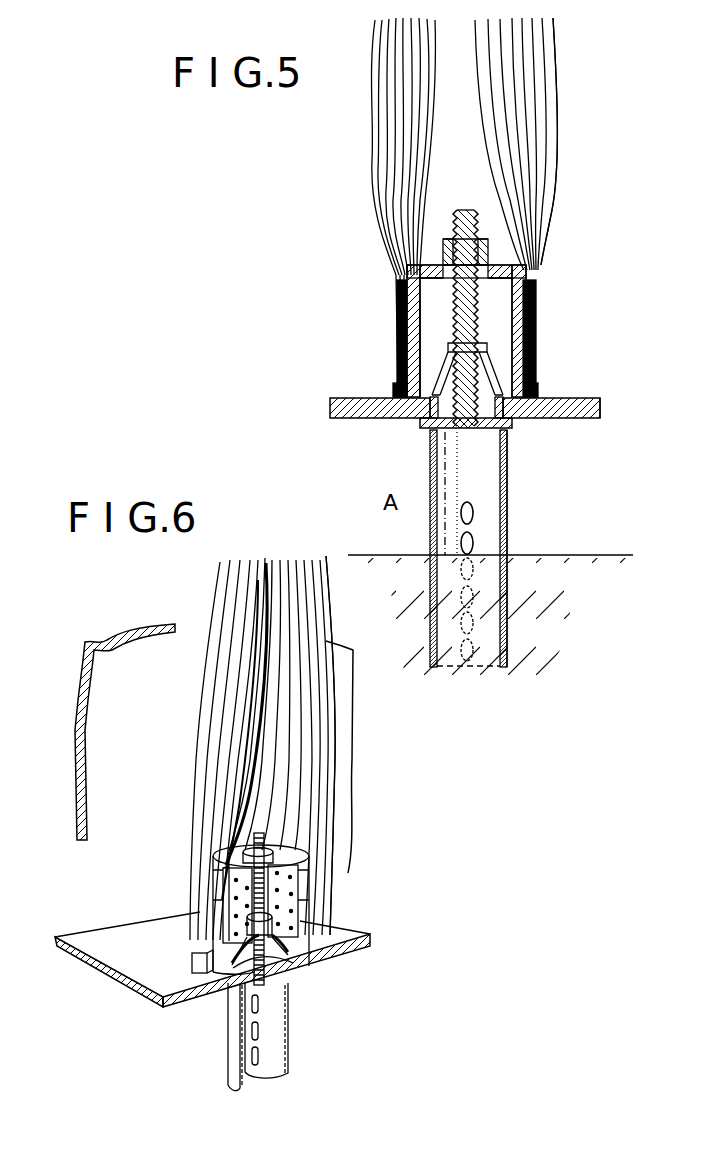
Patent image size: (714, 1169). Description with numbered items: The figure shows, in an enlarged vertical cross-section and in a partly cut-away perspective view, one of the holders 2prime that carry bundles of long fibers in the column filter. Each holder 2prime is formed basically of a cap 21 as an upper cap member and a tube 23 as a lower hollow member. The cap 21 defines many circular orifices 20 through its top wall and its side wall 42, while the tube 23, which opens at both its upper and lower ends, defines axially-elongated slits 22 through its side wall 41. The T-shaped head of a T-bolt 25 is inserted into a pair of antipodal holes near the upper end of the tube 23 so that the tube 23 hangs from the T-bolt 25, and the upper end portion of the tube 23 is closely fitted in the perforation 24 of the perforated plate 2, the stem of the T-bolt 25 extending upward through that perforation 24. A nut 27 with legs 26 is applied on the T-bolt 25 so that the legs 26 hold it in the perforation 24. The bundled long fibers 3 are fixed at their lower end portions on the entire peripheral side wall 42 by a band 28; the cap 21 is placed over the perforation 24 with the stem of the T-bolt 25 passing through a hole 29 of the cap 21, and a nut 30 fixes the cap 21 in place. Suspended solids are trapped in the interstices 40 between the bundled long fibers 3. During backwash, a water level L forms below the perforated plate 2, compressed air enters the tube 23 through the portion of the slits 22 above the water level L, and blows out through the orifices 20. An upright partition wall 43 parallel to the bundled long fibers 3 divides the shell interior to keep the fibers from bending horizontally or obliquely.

In FIG. 5, the perforated plate 2 is at (585, 400).
In FIG. 6, the perforated plate 2 is at (357, 955).
In FIG. 5, the holder 2prime is at (530, 278).
In FIG. 5, the bundled long fibers 3 is at (563, 190).
In FIG. 6, the bundled long fibers 3 is at (362, 840).
In FIG. 5, the circular orifices 20 is at (434, 263).
In FIG. 6, the circular orifices 20 is at (310, 890).
In FIG. 5, the cap 21 is at (400, 275).
In FIG. 6, the cap 21 is at (300, 875).
In FIG. 5, the slits 22 is at (472, 512).
In FIG. 6, the slits 22 is at (257, 1058).
In FIG. 5, the tube 23 is at (478, 460).
In FIG. 6, the tube 23 is at (230, 1025).
In FIG. 5, the perforation 24 is at (548, 406).
In FIG. 5, the T-bolt 25 is at (462, 322).
In FIG. 6, the T-bolt 25 is at (290, 1003).
In FIG. 5, the legs 26 is at (418, 418).
In FIG. 6, the legs 26 is at (290, 940).
In FIG. 5, the nut with legs 27 is at (490, 352).
In FIG. 6, the nut with legs 27 is at (247, 920).
In FIG. 5, the band 28 is at (398, 396).
In FIG. 6, the band 28 is at (192, 963).
In FIG. 5, the hole 29 is at (453, 291).
In FIG. 5, the nut 30 is at (487, 252).
In FIG. 6, the nut 30 is at (275, 855).
In FIG. 5, the interstices 40 is at (413, 148).
In FIG. 6, the interstices 40 is at (215, 812).
In FIG. 5, the side wall of tube 41 is at (507, 490).
In FIG. 6, the side wall of tube 41 is at (283, 1055).
In FIG. 5, the side wall of cap 42 is at (405, 345).
In FIG. 6, the side wall of cap 42 is at (215, 868).
In FIG. 6, the upright partition wall 43 is at (105, 680).
In FIG. 5, the water level L is at (610, 555).